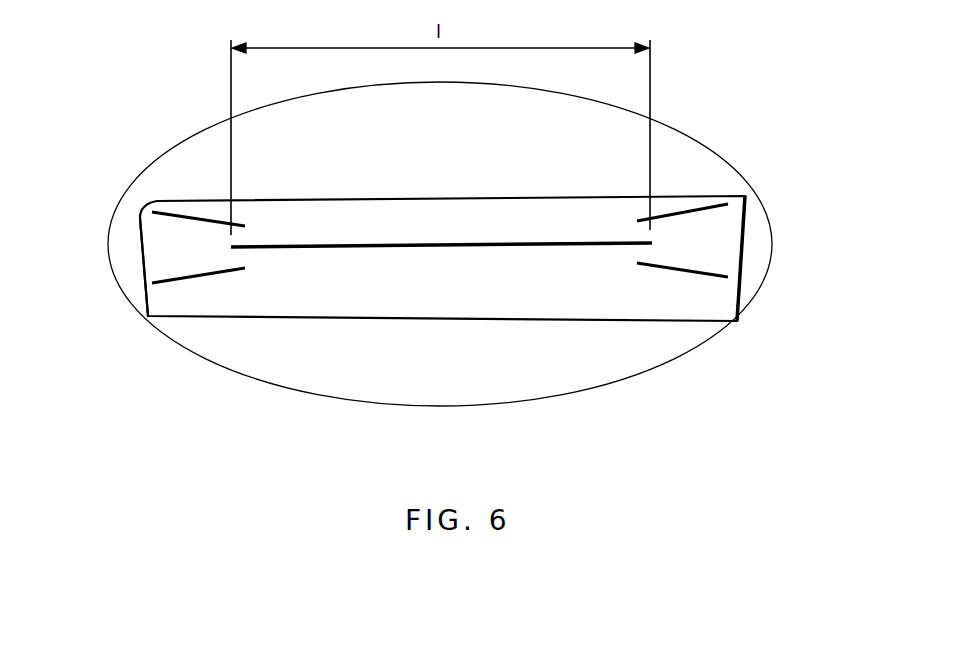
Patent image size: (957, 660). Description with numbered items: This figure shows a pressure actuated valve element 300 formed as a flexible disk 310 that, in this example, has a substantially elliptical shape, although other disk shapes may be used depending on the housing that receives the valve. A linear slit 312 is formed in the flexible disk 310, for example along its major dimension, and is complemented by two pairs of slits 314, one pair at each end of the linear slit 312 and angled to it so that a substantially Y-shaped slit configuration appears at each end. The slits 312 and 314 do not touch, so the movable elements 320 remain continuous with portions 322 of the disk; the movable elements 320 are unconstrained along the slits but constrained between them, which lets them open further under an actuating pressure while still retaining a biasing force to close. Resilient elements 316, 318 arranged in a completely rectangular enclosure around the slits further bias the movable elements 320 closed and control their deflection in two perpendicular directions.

The valve element 300 is at (718, 65).
The flexible disk 310 is at (212, 340).
The linear slit 312 is at (535, 246).
The pairs of slits 314 is at (190, 213).
The resilient element 316 is at (470, 198).
The resilient element 318 is at (140, 265).
The movable elements 320 is at (335, 225).
The portions of the flexible disk 322 is at (715, 225).